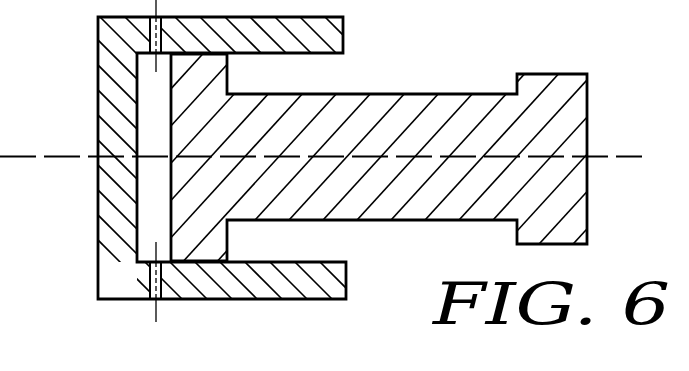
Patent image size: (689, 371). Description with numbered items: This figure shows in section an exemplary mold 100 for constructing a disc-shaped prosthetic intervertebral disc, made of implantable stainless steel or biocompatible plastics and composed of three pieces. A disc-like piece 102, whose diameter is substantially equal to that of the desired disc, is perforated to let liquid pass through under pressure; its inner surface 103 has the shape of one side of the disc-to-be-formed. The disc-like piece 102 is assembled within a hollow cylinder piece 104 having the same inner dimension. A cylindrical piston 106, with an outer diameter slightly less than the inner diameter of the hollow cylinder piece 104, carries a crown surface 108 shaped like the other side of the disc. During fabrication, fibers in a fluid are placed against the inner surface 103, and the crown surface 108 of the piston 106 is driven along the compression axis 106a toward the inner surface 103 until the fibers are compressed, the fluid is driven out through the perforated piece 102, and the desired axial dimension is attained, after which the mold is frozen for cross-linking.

The mold 100 is at (121, 308).
The perforated disc-like piece 102 is at (100, 247).
The inner surface 103 is at (140, 204).
The hollow cylinder piece 104 is at (246, 300).
The cylindrical piston 106 is at (410, 93).
The compression axis 106a is at (72, 157).
The crown surface 108 is at (170, 82).